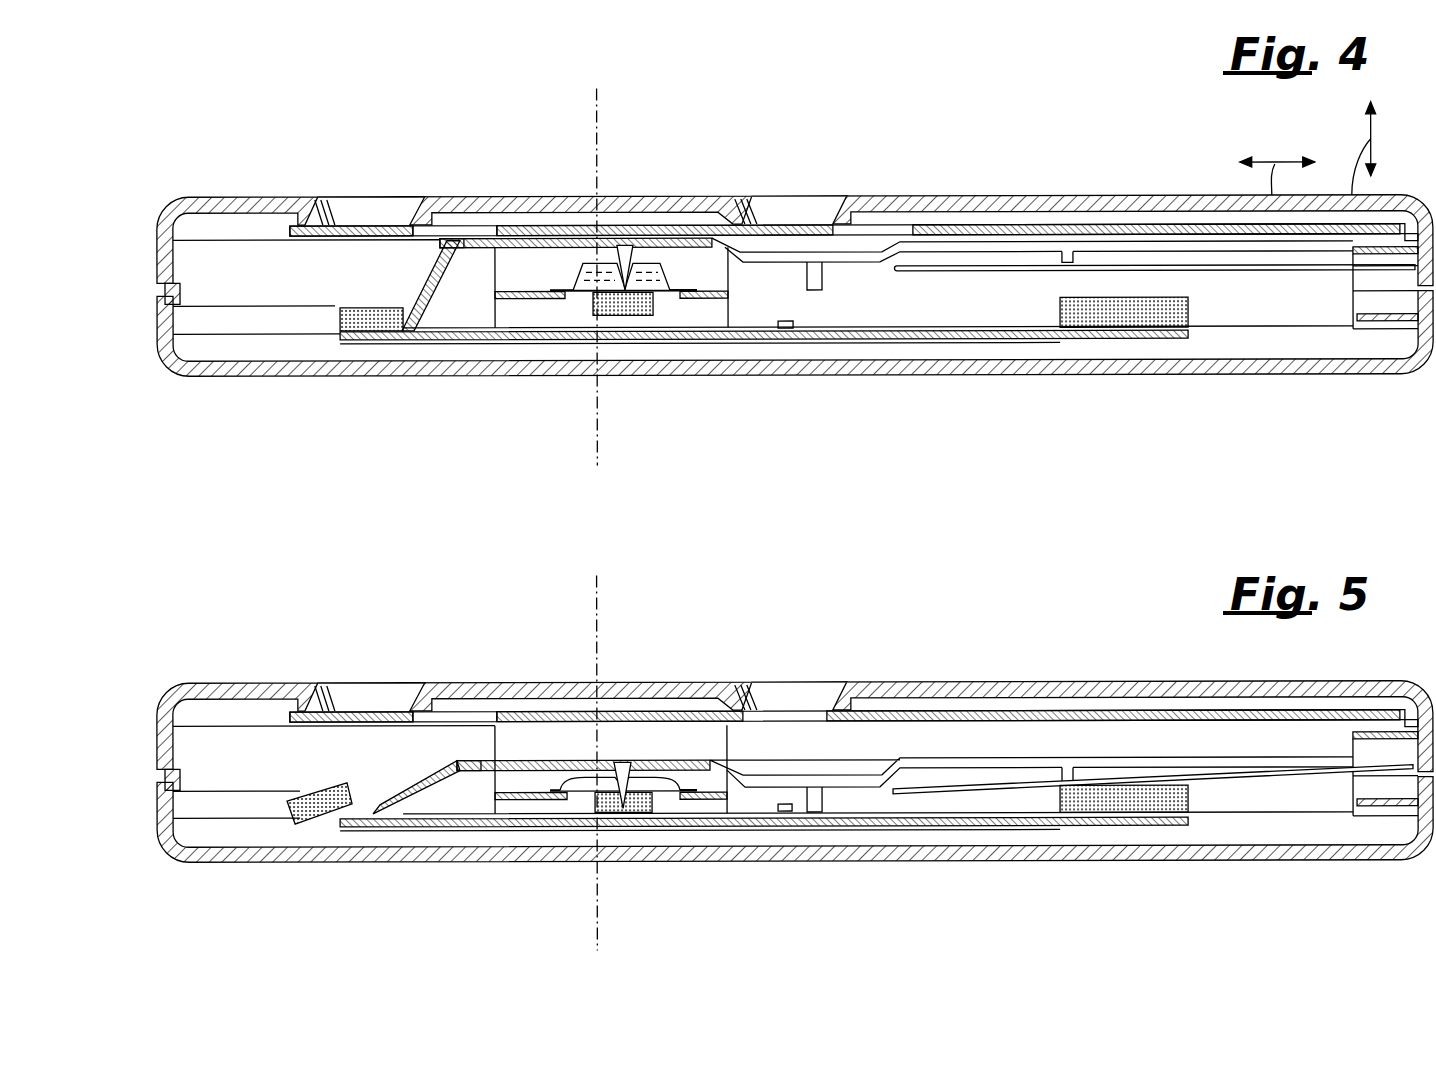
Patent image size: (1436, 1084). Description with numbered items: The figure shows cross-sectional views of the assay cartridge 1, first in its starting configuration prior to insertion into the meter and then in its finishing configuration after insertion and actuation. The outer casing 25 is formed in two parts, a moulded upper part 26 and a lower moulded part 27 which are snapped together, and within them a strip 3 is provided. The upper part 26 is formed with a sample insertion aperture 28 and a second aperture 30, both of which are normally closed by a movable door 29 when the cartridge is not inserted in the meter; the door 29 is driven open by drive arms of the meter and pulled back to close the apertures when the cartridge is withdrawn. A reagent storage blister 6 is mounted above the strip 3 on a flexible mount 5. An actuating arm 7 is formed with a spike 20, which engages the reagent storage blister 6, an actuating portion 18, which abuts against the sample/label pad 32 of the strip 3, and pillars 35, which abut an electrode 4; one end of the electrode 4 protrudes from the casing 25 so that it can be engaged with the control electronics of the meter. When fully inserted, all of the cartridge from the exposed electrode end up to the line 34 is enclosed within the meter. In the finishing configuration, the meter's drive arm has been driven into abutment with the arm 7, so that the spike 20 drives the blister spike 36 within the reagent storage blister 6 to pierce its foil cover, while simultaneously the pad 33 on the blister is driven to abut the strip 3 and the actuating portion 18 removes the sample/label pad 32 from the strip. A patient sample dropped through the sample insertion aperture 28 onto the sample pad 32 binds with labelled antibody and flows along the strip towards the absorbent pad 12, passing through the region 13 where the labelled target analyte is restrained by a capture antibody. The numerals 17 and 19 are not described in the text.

In FIG. 4, the assay cartridge 1 is at (155, 180).
In FIG. 5, the assay cartridge 1 is at (155, 664).
In FIG. 4, the strip 3 is at (440, 344).
In FIG. 5, the strip 3 is at (440, 831).
In FIG. 4, the electrode 4 is at (1247, 272).
In FIG. 5, the electrode 4 is at (1243, 775).
In FIG. 4, the flexible mount 5 is at (530, 300).
In FIG. 5, the flexible mount 5 is at (530, 800).
In FIG. 4, the reagent storage blister 6 is at (681, 238).
In FIG. 5, the reagent storage blister 6 is at (692, 754).
In FIG. 4, the actuating arm 7 is at (1096, 243).
In FIG. 5, the actuating arm 7 is at (1096, 760).
In FIG. 4, the absorbent pad 12 is at (1146, 332).
In FIG. 5, the absorbent pad 12 is at (1146, 822).
In FIG. 4, the region 13 is at (795, 305).
In FIG. 5, the region 13 is at (778, 798).
In FIG. 4, the key plate 17 is at (533, 232).
In FIG. 5, the key plate 17 is at (533, 757).
In FIG. 4, the actuating portion 18 is at (424, 288).
In FIG. 5, the actuating portion 18 is at (420, 788).
In FIG. 4, the pivot joint 19 is at (453, 238).
In FIG. 5, the pivot joint 19 is at (458, 760).
In FIG. 4, the spike 20 is at (641, 244).
In FIG. 5, the spike 20 is at (631, 758).
In FIG. 4, the outer casing 25 is at (155, 327).
In FIG. 5, the outer casing 25 is at (155, 812).
In FIG. 4, the upper part 26 is at (168, 236).
In FIG. 5, the upper part 26 is at (168, 722).
In FIG. 4, the lower part 27 is at (177, 362).
In FIG. 5, the lower part 27 is at (177, 847).
In FIG. 4, the sample insertion aperture 28 is at (356, 210).
In FIG. 5, the sample insertion aperture 28 is at (390, 702).
In FIG. 4, the movable door 29 is at (985, 226).
In FIG. 5, the movable door 29 is at (985, 712).
In FIG. 4, the second aperture 30 is at (784, 210).
In FIG. 5, the second aperture 30 is at (790, 697).
In FIG. 4, the sample/label pad 32 is at (352, 306).
In FIG. 5, the sample/label pad 32 is at (316, 790).
In FIG. 4, the pad 33 is at (642, 316).
In FIG. 5, the pad 33 is at (648, 813).
In FIG. 4, the line 34 is at (597, 95).
In FIG. 5, the line 34 is at (597, 582).
In FIG. 4, the pillars 35 is at (1068, 252).
In FIG. 5, the pillars 35 is at (1067, 768).
In FIG. 4, the blister spike 36 is at (657, 291).
In FIG. 5, the blister spike 36 is at (652, 790).